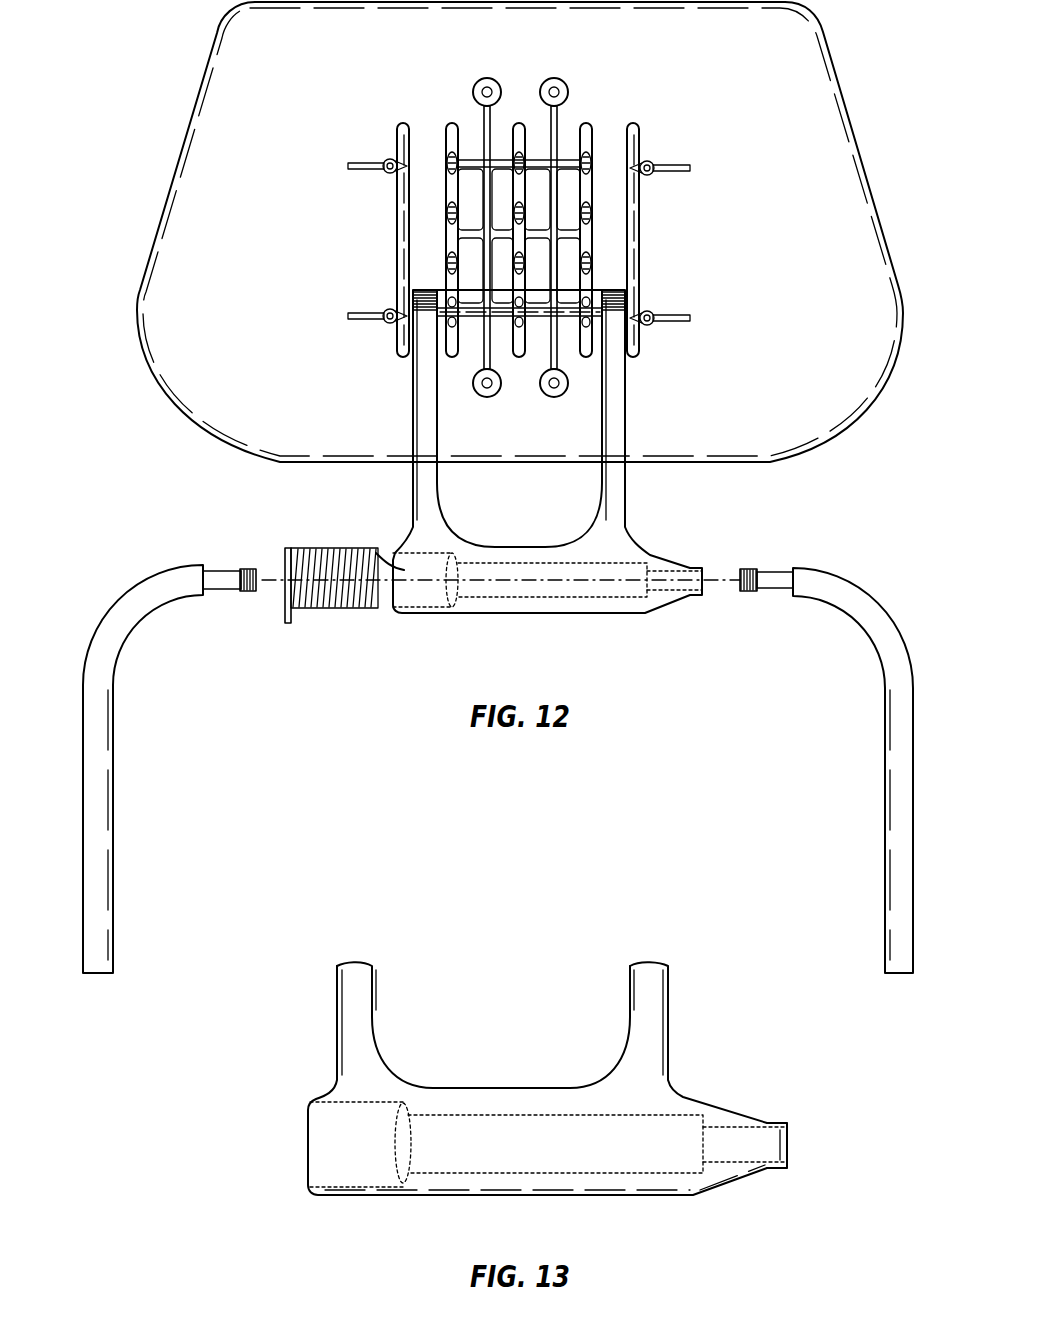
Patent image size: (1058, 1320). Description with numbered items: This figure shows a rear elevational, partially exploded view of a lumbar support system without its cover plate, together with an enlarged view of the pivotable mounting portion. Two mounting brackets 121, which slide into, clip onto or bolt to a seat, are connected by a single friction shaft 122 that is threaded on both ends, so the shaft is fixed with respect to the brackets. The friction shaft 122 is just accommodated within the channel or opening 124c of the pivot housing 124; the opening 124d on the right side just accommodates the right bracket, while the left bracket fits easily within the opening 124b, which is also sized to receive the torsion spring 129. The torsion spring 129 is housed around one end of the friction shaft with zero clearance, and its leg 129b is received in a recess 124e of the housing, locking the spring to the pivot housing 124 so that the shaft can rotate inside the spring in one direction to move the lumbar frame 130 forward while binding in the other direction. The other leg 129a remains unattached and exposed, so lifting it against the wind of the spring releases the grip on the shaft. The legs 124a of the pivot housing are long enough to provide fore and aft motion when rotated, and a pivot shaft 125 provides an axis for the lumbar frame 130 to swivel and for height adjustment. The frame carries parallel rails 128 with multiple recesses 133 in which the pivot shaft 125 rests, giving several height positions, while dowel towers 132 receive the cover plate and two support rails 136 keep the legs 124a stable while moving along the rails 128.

In FIG. 12, the mounting brackets 121 is at (113, 780).
In FIG. 12, the friction shaft 122 is at (545, 598).
In FIG. 12, the pivot housing 124 is at (610, 617).
In FIG. 13, the pivot housing 124 is at (697, 1097).
In FIG. 12, the legs 124a is at (413, 430).
In FIG. 13, the legs 124a is at (373, 988).
In FIG. 13, the opening 124b is at (342, 1100).
In FIG. 13, the channel or opening 124c is at (465, 1175).
In FIG. 13, the opening 124d is at (752, 1165).
In FIG. 13, the recess 124e is at (400, 1127).
In FIG. 12, the pivot shaft 125 is at (471, 318).
In FIG. 12, the rails 128 is at (518, 122).
In FIG. 12, the torsion spring 129 is at (313, 548).
In FIG. 12, the leg 129a is at (292, 618).
In FIG. 12, the leg 129b is at (392, 560).
In FIG. 12, the lumbar frame 130 is at (838, 100).
In FIG. 12, the dowel towers 132 is at (563, 80).
In FIG. 12, the recesses 133 is at (450, 212).
In FIG. 12, the support rails 136 is at (398, 237).